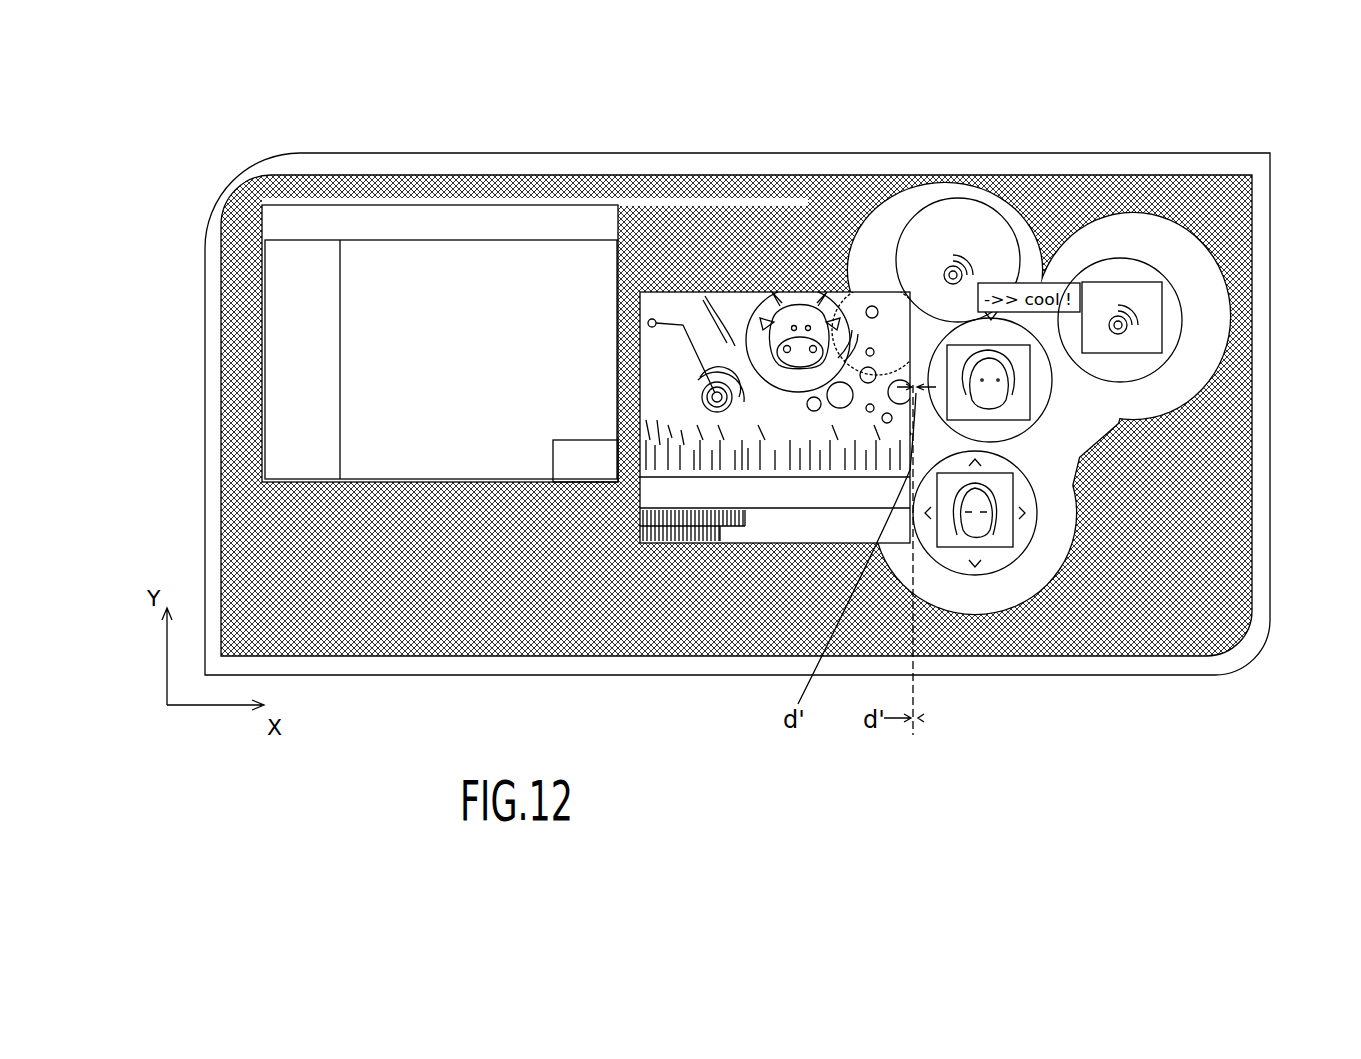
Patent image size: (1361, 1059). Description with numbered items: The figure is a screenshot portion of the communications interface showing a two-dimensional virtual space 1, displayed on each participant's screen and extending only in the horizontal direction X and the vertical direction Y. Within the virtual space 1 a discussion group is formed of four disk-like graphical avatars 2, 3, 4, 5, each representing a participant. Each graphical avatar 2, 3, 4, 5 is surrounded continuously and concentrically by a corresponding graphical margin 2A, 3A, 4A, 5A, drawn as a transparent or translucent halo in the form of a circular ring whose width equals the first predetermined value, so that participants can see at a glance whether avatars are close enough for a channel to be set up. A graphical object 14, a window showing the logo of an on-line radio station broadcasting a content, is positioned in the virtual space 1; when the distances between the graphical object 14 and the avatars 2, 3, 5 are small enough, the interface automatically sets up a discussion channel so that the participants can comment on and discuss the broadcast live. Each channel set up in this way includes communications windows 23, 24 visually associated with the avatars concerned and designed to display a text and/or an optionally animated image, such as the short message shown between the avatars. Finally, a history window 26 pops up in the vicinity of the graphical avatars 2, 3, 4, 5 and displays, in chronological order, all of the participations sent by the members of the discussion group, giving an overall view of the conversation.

The virtual space 1 is at (700, 190).
The graphical avatar 2 is at (1000, 567).
The graphical margin 2A is at (1033, 563).
The graphical avatar 3 is at (1048, 405).
The graphical margin 3A is at (1080, 447).
The graphical avatar 4 is at (1121, 262).
The graphical margin 4A is at (1173, 250).
The graphical avatar 5 is at (980, 222).
The graphical margin 5A is at (929, 195).
The graphical object 14 is at (857, 290).
The communications window 23 is at (1042, 240).
The communications window 24 is at (1053, 377).
The history window 26 is at (548, 250).